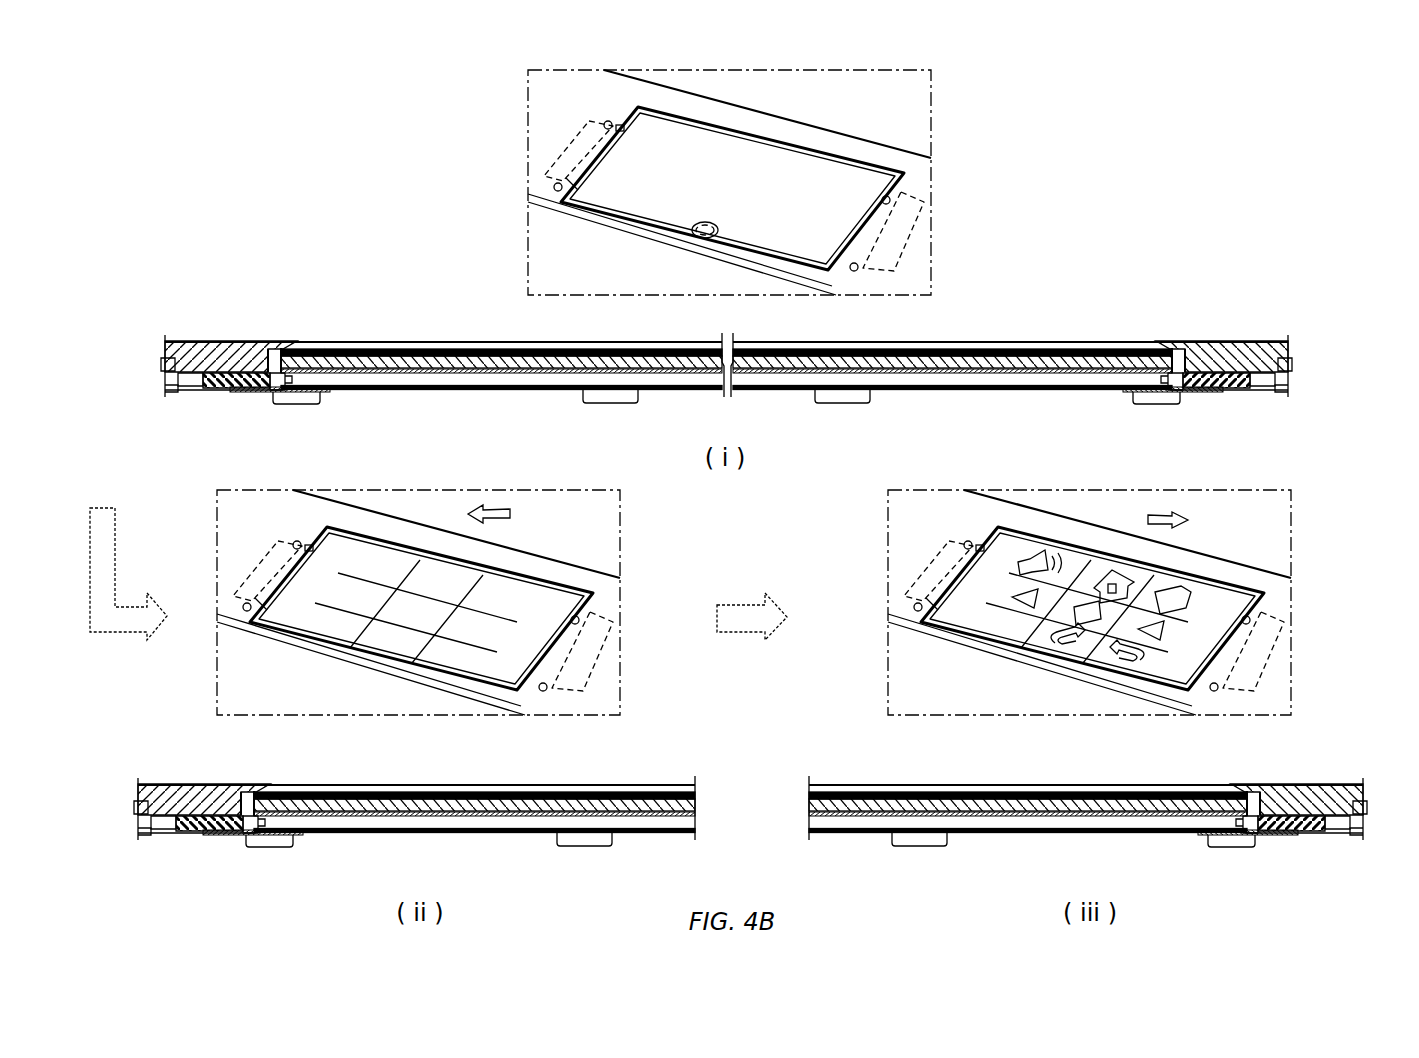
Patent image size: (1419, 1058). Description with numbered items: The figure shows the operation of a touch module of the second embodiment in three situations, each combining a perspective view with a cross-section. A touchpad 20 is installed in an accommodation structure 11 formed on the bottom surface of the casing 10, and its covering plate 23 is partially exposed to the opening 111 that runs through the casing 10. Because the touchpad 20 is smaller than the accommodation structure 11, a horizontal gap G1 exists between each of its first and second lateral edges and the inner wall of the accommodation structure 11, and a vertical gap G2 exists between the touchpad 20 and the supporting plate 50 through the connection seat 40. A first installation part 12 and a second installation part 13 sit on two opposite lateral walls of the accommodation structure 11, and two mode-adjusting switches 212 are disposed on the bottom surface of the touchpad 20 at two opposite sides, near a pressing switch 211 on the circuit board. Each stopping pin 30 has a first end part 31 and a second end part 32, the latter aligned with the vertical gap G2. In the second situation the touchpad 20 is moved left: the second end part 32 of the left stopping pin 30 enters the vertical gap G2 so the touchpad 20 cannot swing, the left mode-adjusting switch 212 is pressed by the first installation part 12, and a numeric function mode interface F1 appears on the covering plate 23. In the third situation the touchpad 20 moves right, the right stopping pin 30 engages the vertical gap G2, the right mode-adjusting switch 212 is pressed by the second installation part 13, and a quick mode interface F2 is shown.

The casing 10 is at (558, 85).
The accommodation structure 11 is at (270, 360).
The first installation part 12 is at (572, 147).
The second installation part 13 is at (888, 228).
The touchpad 20 is at (783, 142).
The covering plate 23 is at (843, 173).
The opening 111 is at (572, 183).
The pressing switch 211 is at (705, 222).
The mode-adjusting switch 212 is at (628, 110).
The stopping pin 30 is at (228, 386).
The first end part 31 is at (192, 378).
The second end part 32 is at (270, 390).
The connection seat 40 is at (500, 375).
The supporting plate 50 is at (382, 393).
The horizontal gap G1 is at (1260, 815).
The vertical gap G2 is at (839, 872).
The function mode interface F1 is at (323, 627).
The function mode interface F2 is at (994, 627).